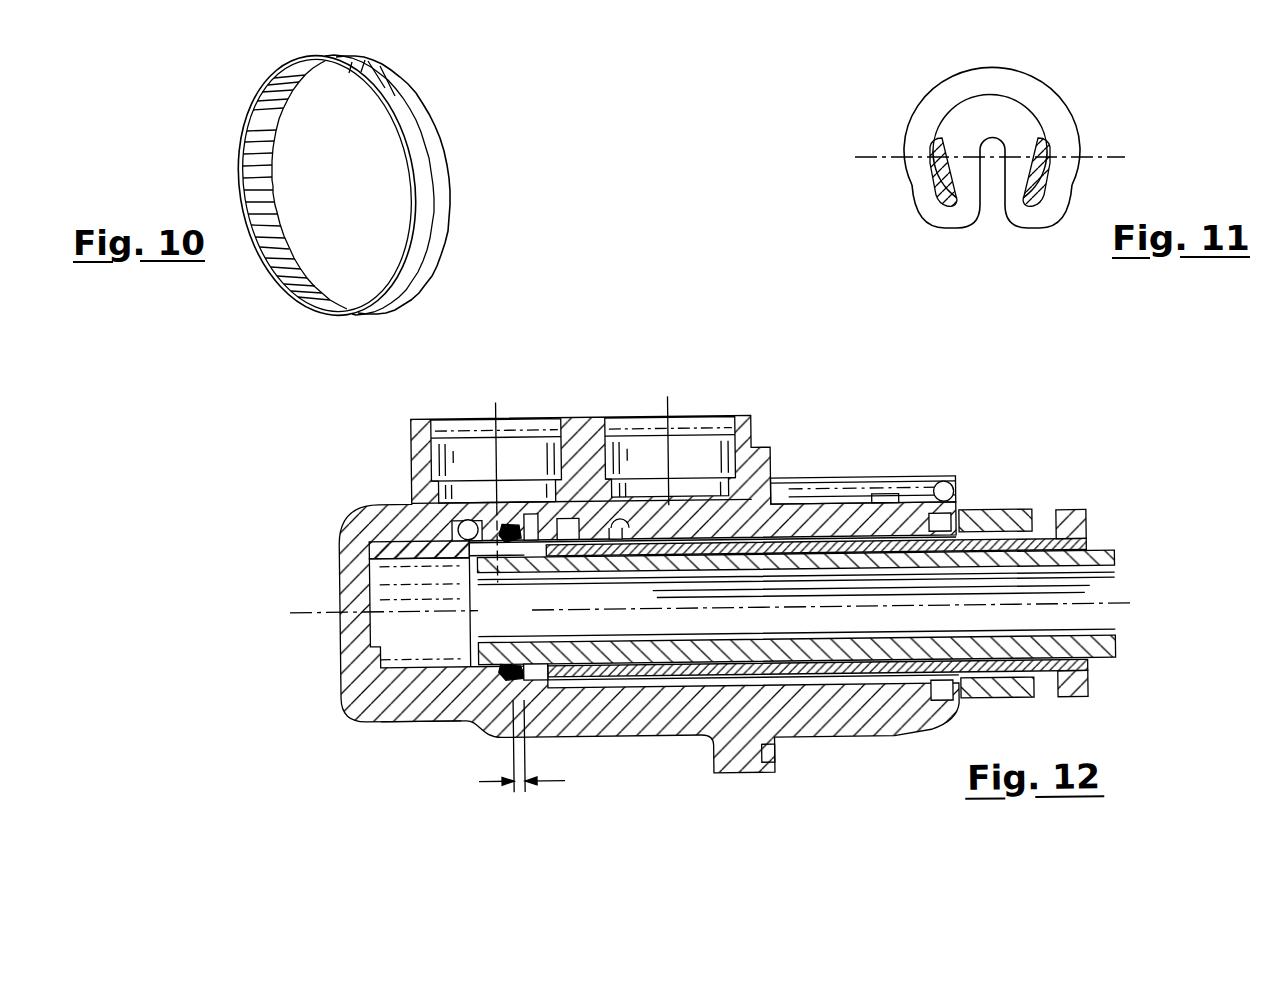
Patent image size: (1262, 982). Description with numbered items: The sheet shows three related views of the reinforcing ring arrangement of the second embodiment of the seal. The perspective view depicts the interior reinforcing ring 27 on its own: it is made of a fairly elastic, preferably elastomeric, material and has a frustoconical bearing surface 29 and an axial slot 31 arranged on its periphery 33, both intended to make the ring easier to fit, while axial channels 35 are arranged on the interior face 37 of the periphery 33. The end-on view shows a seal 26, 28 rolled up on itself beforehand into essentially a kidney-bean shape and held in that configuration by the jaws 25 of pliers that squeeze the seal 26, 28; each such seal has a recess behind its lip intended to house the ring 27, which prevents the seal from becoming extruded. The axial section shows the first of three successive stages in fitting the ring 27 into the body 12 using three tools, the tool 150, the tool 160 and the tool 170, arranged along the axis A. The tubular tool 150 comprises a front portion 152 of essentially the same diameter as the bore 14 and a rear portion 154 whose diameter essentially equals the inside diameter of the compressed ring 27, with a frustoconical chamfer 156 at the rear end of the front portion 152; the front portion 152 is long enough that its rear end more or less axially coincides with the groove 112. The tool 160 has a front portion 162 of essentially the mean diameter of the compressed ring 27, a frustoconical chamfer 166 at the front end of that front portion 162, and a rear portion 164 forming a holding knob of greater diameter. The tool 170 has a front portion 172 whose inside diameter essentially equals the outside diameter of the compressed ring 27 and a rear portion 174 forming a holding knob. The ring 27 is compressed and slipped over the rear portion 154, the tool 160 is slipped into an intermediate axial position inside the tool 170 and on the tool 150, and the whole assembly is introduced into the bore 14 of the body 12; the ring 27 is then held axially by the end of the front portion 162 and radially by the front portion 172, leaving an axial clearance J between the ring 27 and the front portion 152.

In FIG. 10, the interior reinforcing ring 27 is at (458, 153).
In FIG. 12, the interior reinforcing ring 27 is at (527, 516).
In FIG. 10, the frustoconical bearing surface 29 is at (383, 102).
In FIG. 10, the axial slot 31 is at (358, 73).
In FIG. 10, the periphery 33 is at (456, 206).
In FIG. 10, the axial channels 35 is at (263, 183).
In FIG. 10, the interior face 37 is at (300, 259).
In FIG. 11, the jaws 25 is at (923, 173).
In FIG. 11, the seal 26 is at (1038, 147).
In FIG. 12, the seal 26 is at (413, 503).
In FIG. 11, the seal 28 is at (1037, 93).
In FIG. 12, the body 12 is at (577, 438).
In FIG. 12, the bore 14 is at (393, 720).
In FIG. 12, the tool 150 is at (370, 541).
In FIG. 12, the front portion 152 is at (415, 548).
In FIG. 12, the rear portion 154 is at (628, 556).
In FIG. 12, the frustoconical chamfer 156 is at (505, 556).
In FIG. 12, the tool 160 is at (728, 555).
In FIG. 12, the front portion 162 is at (943, 556).
In FIG. 12, the rear portion 164 is at (1082, 530).
In FIG. 12, the frustoconical chamfer 166 is at (512, 558).
In FIG. 12, the tool 170 is at (983, 513).
In FIG. 12, the front portion 172 is at (790, 555).
In FIG. 12, the rear portion 174 is at (1013, 516).
In FIG. 12, the groove 112 is at (520, 693).
In FIG. 12, the axis A is at (1130, 608).
In FIG. 12, the axial clearance J is at (521, 746).